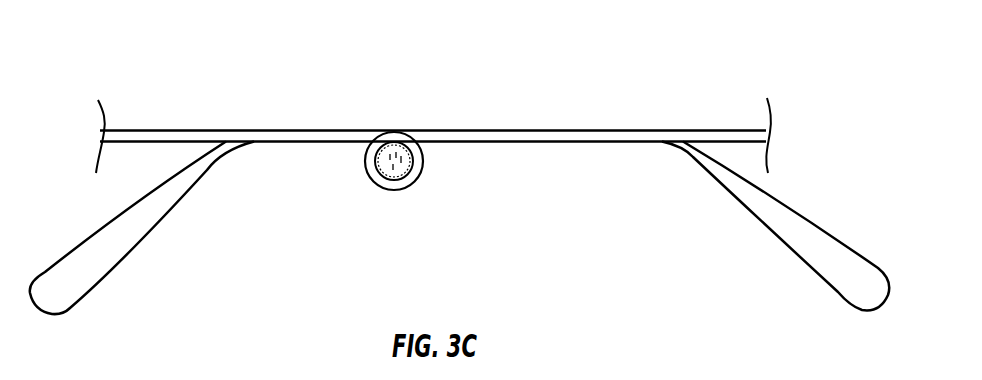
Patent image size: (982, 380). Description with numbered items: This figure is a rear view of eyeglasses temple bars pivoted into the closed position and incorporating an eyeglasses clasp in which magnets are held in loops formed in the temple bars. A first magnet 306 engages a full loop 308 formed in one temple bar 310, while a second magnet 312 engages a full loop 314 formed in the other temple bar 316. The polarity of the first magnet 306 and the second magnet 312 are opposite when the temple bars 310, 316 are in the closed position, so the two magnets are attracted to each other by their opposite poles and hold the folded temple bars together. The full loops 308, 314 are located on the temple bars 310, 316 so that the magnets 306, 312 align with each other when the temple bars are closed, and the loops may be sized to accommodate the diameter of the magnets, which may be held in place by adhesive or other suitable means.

The first magnet 306 is at (403, 172).
The full loop 308 is at (382, 186).
The temple bar 310 is at (165, 131).
The second magnet 312 is at (387, 119).
The full loop 314 is at (403, 133).
The temple bar 316 is at (702, 130).